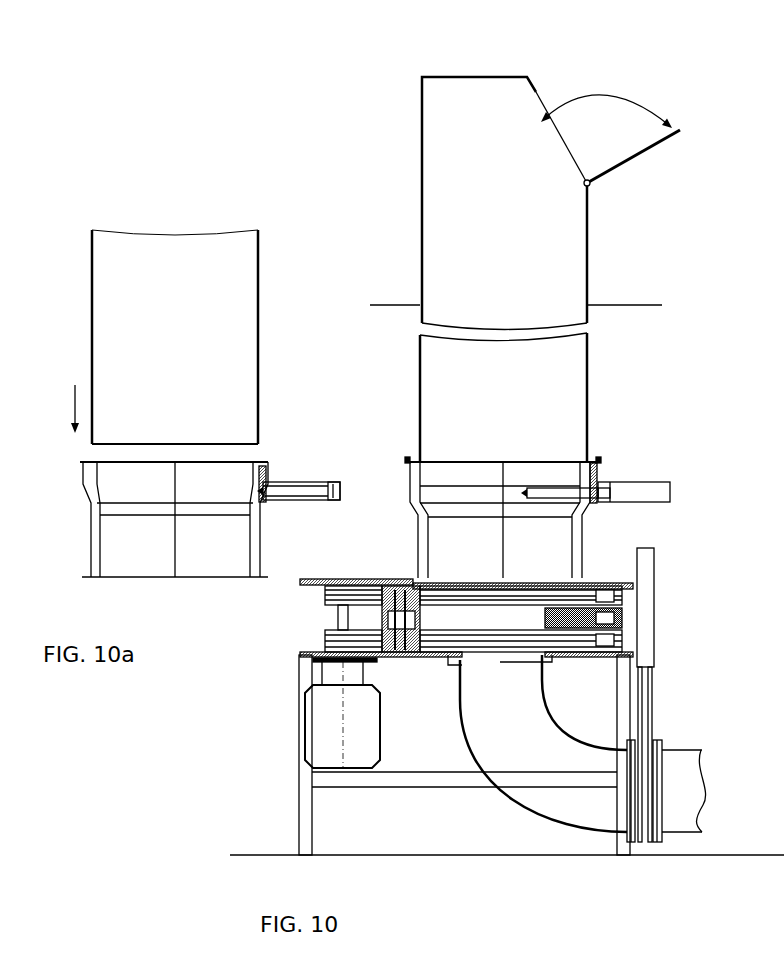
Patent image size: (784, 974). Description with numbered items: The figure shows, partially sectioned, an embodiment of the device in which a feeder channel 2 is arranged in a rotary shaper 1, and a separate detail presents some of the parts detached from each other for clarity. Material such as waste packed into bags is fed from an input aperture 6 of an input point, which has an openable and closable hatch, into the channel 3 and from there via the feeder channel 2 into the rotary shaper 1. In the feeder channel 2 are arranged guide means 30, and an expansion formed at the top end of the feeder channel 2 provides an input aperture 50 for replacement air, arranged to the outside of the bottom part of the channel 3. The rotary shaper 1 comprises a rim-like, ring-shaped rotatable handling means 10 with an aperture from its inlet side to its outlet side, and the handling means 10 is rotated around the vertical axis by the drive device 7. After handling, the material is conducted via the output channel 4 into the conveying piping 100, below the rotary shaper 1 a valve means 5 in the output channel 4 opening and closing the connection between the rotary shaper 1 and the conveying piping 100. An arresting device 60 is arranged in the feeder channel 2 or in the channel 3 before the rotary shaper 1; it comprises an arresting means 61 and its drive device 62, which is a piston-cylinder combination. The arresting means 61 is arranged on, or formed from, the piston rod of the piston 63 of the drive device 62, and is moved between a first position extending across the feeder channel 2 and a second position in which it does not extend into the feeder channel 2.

In FIG. 10, the rotary shaper 1 is at (368, 594).
In FIG. 10A, the feeder channel 2 is at (163, 498).
In FIG. 10, the feeder channel 2 is at (490, 497).
In FIG. 10A, the channel 3 is at (190, 300).
In FIG. 10, the channel 3 is at (427, 367).
In FIG. 10, the output channel 4 is at (538, 815).
In FIG. 10, the valve means 5 is at (633, 842).
In FIG. 10, the input aperture 6 is at (540, 97).
In FIG. 10, the drive device 7 is at (327, 718).
In FIG. 10, the handling means 10 is at (398, 618).
In FIG. 10A, the guide means 30 is at (97, 572).
In FIG. 10, the guide means 30 is at (420, 570).
In FIG. 10, the input aperture for replacement air 50 is at (414, 456).
In FIG. 10A, the arresting device 60 is at (296, 472).
In FIG. 10, the arresting device 60 is at (620, 468).
In FIG. 10A, the arresting means 61 is at (275, 468).
In FIG. 10, the arresting means 61 is at (596, 480).
In FIG. 10A, the drive device 62 is at (305, 500).
In FIG. 10, the drive device 62 is at (665, 500).
In FIG. 10A, the piston 63 is at (333, 482).
In FIG. 10, the piston 63 is at (612, 490).
In FIG. 10, the conveying piping 100 is at (680, 790).